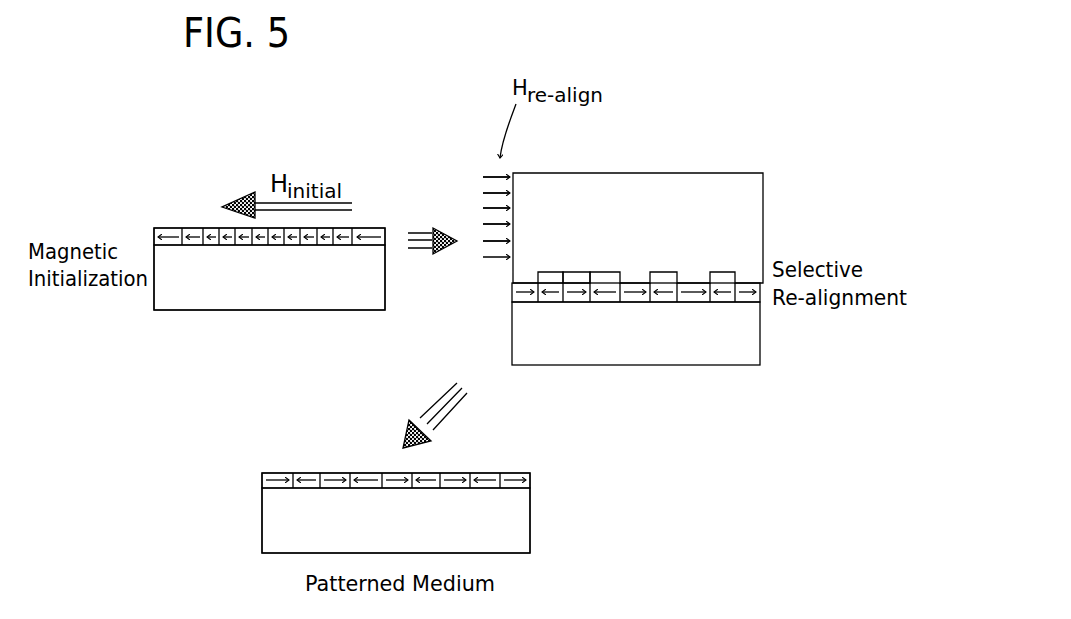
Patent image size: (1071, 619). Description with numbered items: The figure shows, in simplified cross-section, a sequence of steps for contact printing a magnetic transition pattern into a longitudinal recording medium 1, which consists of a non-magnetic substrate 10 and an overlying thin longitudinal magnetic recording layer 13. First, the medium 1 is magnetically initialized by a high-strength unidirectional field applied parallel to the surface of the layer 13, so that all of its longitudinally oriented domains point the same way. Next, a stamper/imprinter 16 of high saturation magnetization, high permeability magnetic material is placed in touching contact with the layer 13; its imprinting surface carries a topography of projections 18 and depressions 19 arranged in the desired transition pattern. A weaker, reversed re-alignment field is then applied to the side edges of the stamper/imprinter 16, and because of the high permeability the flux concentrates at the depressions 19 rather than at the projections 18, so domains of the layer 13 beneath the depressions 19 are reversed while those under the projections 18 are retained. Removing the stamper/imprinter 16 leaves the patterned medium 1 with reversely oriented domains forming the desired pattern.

The longitudinal recording medium 1 is at (146, 302).
The non-magnetic substrate 10 is at (288, 292).
The magnetic recording layer 13 is at (367, 228).
The stamper/imprinter 16 is at (768, 201).
The projections 18 is at (553, 281).
The depressions 19 is at (578, 272).